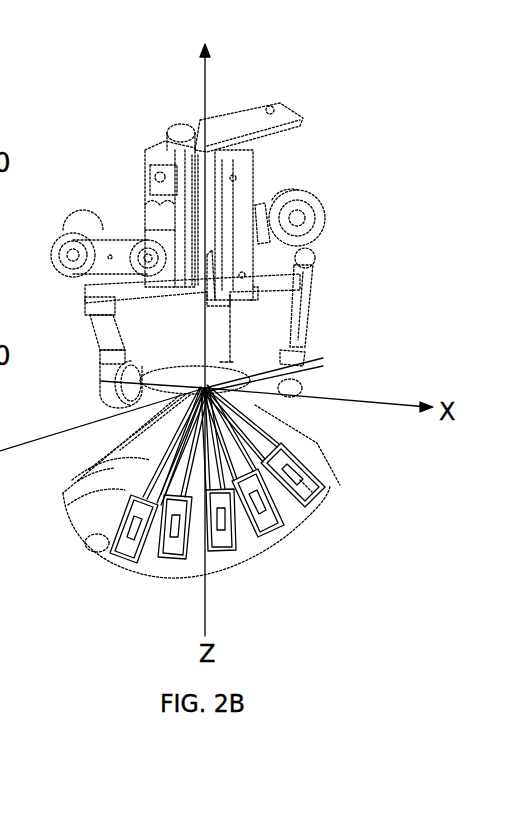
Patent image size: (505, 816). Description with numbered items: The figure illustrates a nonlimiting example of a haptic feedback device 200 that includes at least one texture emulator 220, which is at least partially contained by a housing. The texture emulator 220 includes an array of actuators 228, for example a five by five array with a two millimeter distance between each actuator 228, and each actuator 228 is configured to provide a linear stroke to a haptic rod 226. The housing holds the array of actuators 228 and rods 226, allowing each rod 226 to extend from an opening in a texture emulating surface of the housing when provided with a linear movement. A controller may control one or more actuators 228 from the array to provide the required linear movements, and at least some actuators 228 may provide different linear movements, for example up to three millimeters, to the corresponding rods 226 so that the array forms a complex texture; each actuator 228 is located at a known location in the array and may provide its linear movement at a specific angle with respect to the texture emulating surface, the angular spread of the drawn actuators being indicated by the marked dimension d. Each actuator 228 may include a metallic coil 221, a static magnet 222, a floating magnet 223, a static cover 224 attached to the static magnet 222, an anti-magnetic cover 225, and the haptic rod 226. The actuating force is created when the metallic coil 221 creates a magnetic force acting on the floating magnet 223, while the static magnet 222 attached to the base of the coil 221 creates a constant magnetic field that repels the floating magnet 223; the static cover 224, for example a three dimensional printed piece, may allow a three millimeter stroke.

The haptic feedback device 200 is at (160, 122).
The texture emulator 220 is at (117, 566).
The metallic coil 221 is at (282, 525).
The static magnet 222 is at (318, 494).
The floating magnet 223 is at (314, 460).
The static cover 224 is at (303, 467).
The anti-magnetic cover 225 is at (320, 488).
The haptic rod 226 is at (78, 481).
The actuator 228 is at (100, 532).
The distance d is at (231, 330).